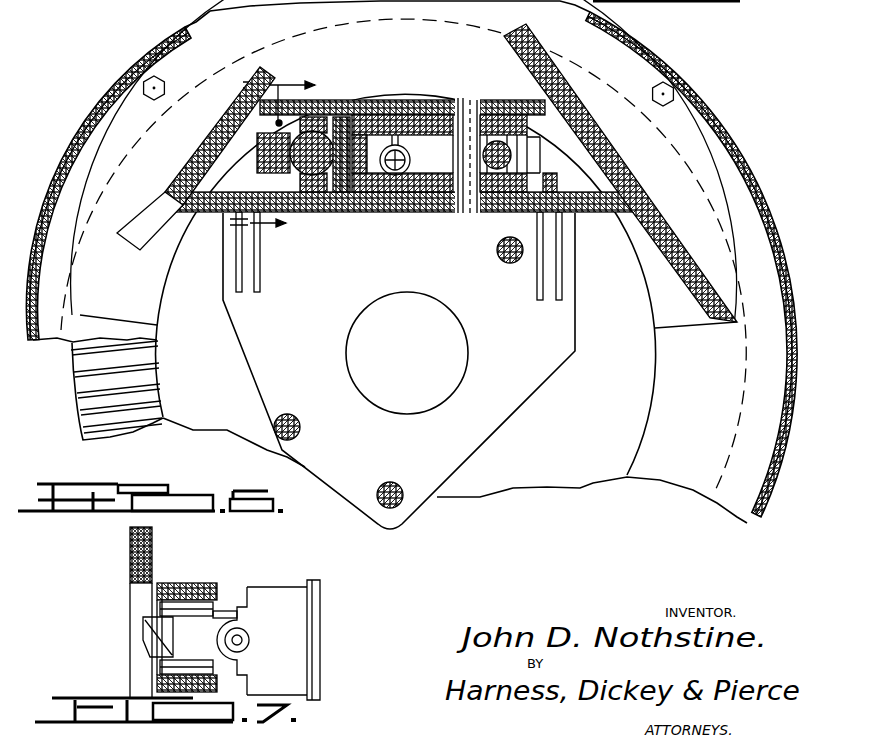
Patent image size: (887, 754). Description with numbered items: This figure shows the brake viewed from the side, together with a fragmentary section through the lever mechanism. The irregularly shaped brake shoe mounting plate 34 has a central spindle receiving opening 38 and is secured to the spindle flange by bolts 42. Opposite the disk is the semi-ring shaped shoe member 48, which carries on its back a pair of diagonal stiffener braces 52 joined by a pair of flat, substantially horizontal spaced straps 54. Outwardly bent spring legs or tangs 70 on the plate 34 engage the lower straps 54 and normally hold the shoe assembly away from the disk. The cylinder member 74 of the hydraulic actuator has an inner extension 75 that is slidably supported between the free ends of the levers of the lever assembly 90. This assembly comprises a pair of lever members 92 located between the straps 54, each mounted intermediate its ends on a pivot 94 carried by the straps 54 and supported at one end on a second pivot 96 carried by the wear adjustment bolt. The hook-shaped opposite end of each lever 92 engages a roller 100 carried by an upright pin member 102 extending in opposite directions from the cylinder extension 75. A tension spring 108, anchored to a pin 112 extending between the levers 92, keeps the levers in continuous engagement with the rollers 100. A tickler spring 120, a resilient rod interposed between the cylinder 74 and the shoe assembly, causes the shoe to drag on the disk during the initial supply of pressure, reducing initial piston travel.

In FIG. 5, the brake shoe mounting plate 34 is at (515, 392).
In FIG. 5, the central spindle receiving opening 38 is at (428, 410).
In FIG. 5, the bolts 42 is at (298, 418).
In FIG. 5, the shoe member 48 is at (684, 304).
In FIG. 5, the diagonal stiffener braces 52 is at (200, 156).
In FIG. 5, the straps 54 is at (356, 100).
In FIG. 7, the straps 54 is at (180, 583).
In FIG. 5, the spring legs or tangs 70 is at (572, 240).
In FIG. 7, the cylinder member 74 is at (283, 630).
In FIG. 7, the inner extension of the cylinder 75 is at (217, 617).
In FIG. 5, the lever assembly 90 is at (406, 158).
In FIG. 5, the lever members 92 is at (440, 115).
In FIG. 7, the lever members 92 is at (158, 606).
In FIG. 5, the pivot 94 is at (465, 208).
In FIG. 5, the second pivot 96 is at (494, 140).
In FIG. 5, the roller 100 is at (360, 115).
In FIG. 5, the upright pin member 102 is at (336, 195).
In FIG. 5, the tension spring 108 is at (411, 160).
In FIG. 5, the pin 112 is at (400, 138).
In FIG. 5, the tickler spring 120 is at (276, 123).
In FIG. 7, the tickler spring 120 is at (222, 612).